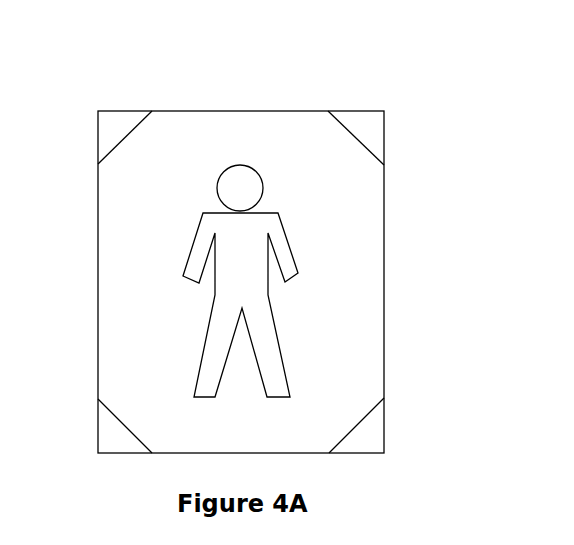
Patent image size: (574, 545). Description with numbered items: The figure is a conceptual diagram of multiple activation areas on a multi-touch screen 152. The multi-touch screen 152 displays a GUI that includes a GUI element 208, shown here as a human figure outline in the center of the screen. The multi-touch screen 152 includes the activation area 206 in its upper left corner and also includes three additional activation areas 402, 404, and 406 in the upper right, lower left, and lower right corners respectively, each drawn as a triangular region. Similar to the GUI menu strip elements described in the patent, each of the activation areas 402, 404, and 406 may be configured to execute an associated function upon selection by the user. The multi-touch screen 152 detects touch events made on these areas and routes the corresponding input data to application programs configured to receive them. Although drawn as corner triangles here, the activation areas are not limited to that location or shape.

The multi-touch screen 152 is at (98, 275).
The activation area 206 is at (115, 127).
The activation area 402 is at (365, 125).
The activation area 404 is at (115, 440).
The activation area 406 is at (364, 439).
The GUI element 208 is at (289, 234).